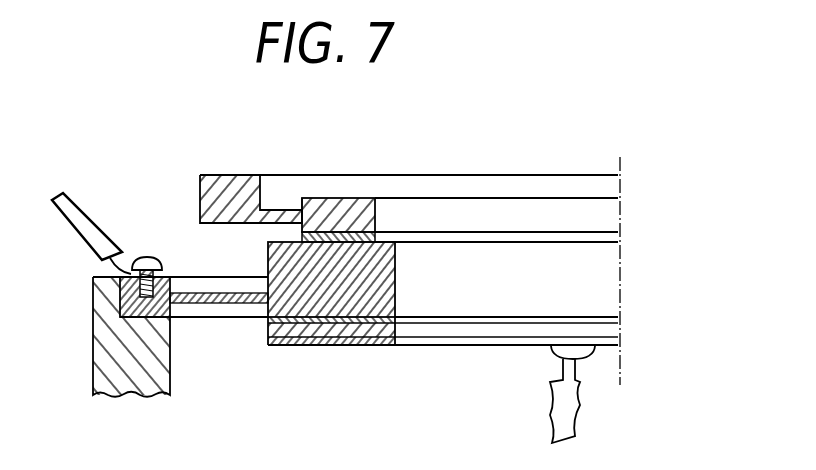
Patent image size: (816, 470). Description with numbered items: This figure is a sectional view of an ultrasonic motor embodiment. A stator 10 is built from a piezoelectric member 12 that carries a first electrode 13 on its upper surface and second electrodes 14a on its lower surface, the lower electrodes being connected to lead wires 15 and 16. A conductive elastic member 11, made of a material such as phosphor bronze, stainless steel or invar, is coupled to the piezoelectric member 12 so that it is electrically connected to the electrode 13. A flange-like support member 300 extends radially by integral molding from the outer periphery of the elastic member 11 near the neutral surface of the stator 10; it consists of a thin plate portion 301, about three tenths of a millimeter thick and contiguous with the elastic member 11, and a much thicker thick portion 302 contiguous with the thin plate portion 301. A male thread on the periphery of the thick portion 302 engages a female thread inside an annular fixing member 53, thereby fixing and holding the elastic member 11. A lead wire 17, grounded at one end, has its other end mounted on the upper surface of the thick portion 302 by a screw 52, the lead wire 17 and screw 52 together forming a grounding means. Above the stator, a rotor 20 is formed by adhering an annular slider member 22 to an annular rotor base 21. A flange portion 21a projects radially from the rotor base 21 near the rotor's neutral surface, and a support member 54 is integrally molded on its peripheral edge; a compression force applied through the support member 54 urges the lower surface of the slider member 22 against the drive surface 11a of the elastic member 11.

The stator 10 is at (605, 233).
The elastic member 11 is at (608, 288).
The drive surface 11a is at (285, 253).
The piezoelectric member 12 is at (610, 333).
The first electrode 13 is at (437, 320).
The second electrode 14a is at (443, 377).
The lead wire 15 is at (612, 394).
The lead wire 16 is at (570, 420).
The lead wire 17 is at (106, 272).
The rotor 20 is at (557, 131).
The rotor base 21 is at (495, 213).
The flange portion 21a is at (270, 215).
The slider member 22 is at (535, 234).
The screw 52 is at (147, 257).
The fixing member 53 is at (108, 338).
The support member 54 is at (213, 188).
The support member 300 is at (288, 357).
The thin plate portion 301 is at (243, 306).
The thick portion 302 is at (155, 318).